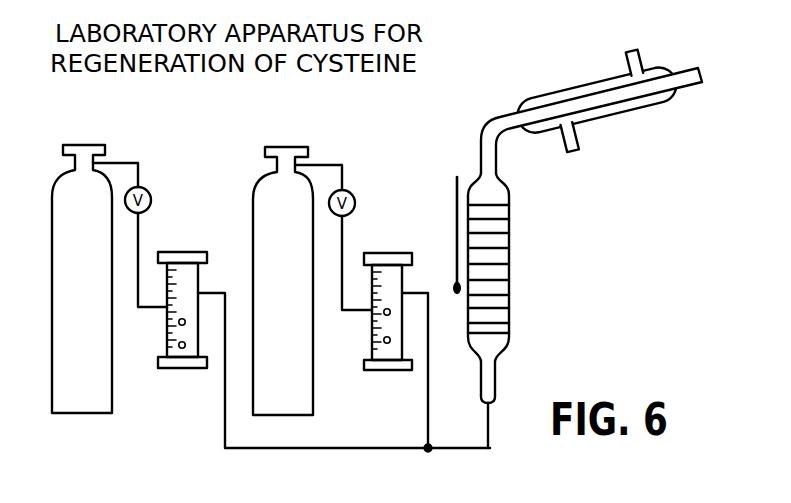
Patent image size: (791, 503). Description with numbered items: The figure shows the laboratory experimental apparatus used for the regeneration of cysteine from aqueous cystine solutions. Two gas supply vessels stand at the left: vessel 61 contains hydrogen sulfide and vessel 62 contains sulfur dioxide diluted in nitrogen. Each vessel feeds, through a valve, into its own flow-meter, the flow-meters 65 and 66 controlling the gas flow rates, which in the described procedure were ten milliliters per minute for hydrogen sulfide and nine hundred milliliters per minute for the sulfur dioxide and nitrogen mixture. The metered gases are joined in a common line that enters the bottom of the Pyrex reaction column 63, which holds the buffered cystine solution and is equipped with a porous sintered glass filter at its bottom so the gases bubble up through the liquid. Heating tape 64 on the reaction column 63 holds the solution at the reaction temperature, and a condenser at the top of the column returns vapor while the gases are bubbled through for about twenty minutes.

The vessel 61 is at (95, 413).
The vessel 62 is at (313, 397).
The reaction column 63 is at (509, 192).
The heating tape 64 is at (509, 296).
The flow-meter 65 is at (185, 368).
The flow-meter 66 is at (391, 370).